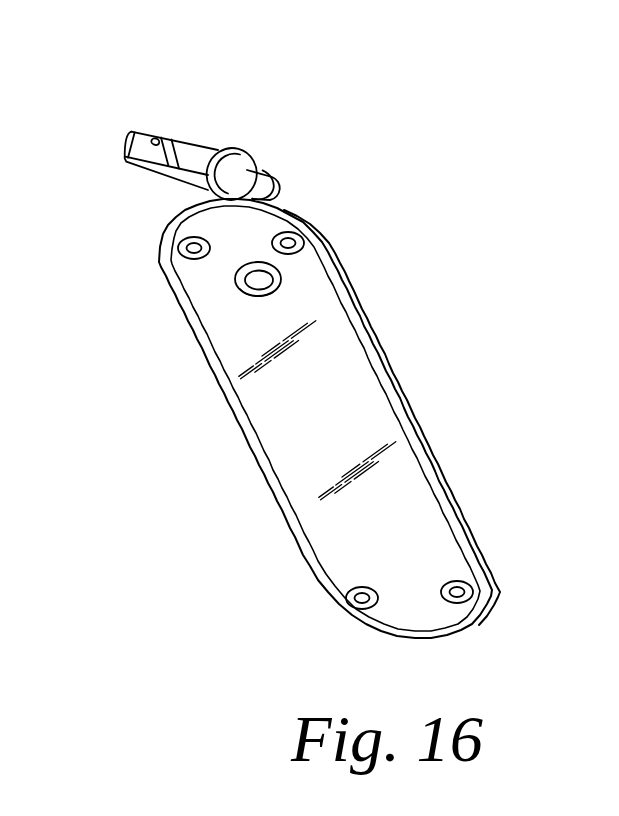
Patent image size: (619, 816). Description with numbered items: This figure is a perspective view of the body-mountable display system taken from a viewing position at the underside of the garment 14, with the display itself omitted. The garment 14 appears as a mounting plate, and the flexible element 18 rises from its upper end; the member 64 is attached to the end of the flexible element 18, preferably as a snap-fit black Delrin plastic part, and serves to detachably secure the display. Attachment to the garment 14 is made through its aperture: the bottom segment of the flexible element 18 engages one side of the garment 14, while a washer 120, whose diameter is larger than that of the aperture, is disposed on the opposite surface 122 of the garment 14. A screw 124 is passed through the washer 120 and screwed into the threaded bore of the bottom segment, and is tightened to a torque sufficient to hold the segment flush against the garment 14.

The garment 14 is at (438, 603).
The flexible element 18 is at (248, 163).
The member 64 is at (143, 138).
The washer 120 is at (275, 283).
The surface 122 is at (402, 498).
The screw 124 is at (250, 290).